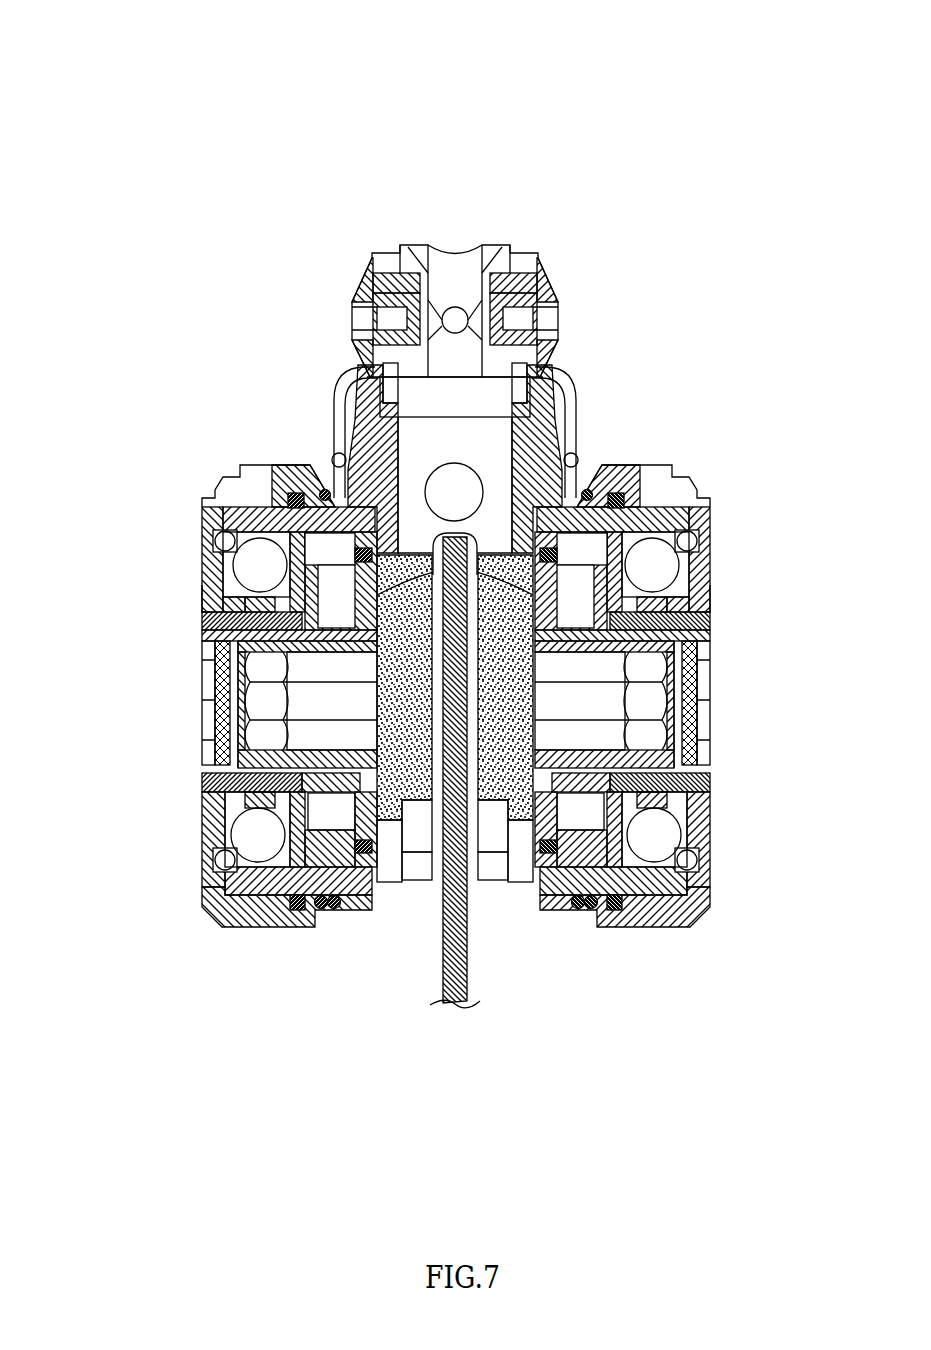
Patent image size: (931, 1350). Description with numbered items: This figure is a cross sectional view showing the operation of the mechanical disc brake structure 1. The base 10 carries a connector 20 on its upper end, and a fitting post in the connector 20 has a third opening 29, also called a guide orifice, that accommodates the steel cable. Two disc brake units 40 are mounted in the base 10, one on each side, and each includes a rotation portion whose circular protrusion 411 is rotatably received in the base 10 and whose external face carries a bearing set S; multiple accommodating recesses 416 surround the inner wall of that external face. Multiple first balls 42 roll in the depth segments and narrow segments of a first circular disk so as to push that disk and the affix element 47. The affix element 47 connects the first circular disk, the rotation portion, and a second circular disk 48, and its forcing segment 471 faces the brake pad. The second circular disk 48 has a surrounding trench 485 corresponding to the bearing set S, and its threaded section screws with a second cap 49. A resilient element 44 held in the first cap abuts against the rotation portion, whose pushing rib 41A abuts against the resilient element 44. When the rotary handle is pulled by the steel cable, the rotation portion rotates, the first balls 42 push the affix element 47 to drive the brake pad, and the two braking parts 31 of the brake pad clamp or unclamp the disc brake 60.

The mechanical disc brake structure 1 is at (753, 213).
The base 10 is at (207, 933).
The connector 20 is at (583, 296).
The third opening 29 is at (455, 268).
The braking parts 31 is at (202, 774).
The disc brake unit 40 is at (363, 938).
The pushing rib 41A is at (350, 913).
The circular protrusion 411 is at (257, 487).
The accommodating recesses 416 is at (302, 498).
The first balls 42 is at (262, 556).
The resilient element 44 is at (318, 910).
The affix element 47 is at (300, 617).
The forcing segment 471 is at (423, 556).
The second circular disk 48 is at (213, 563).
The surrounding trench 485 is at (202, 593).
The second cap 49 is at (222, 685).
The disc brake 60 is at (467, 940).
The bearing set S is at (222, 542).